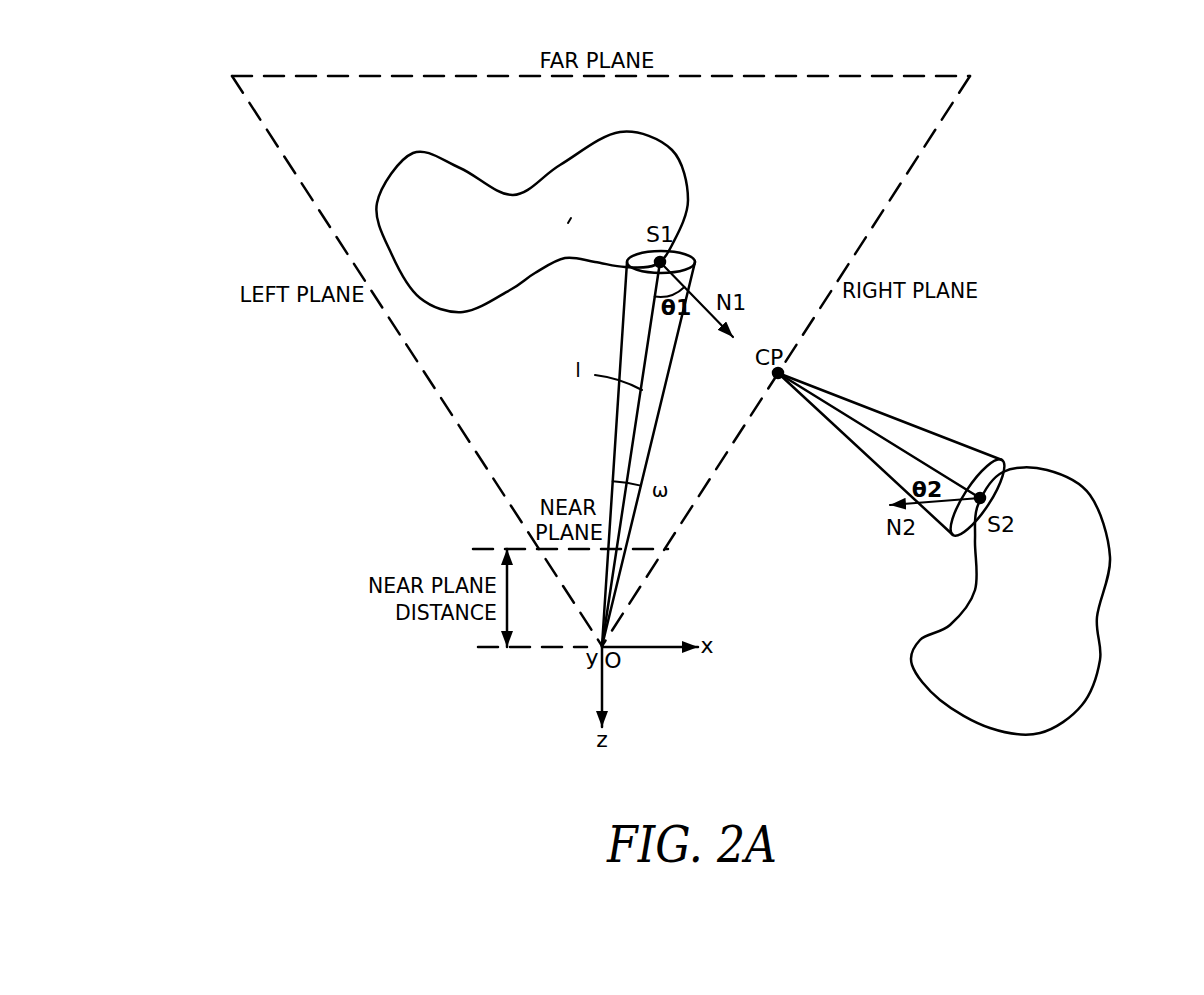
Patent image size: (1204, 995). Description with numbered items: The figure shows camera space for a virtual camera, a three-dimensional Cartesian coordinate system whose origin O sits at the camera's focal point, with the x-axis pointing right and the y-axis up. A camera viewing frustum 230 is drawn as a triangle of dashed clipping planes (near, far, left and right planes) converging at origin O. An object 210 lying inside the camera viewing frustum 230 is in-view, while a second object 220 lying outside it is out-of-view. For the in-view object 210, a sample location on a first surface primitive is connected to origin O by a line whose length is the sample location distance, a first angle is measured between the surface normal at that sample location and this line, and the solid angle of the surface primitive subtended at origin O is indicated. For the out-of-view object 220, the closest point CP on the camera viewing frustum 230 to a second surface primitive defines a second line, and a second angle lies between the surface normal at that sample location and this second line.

The object 210 is at (487, 185).
The object 220 is at (1098, 492).
The camera viewing frustum 230 is at (442, 402).